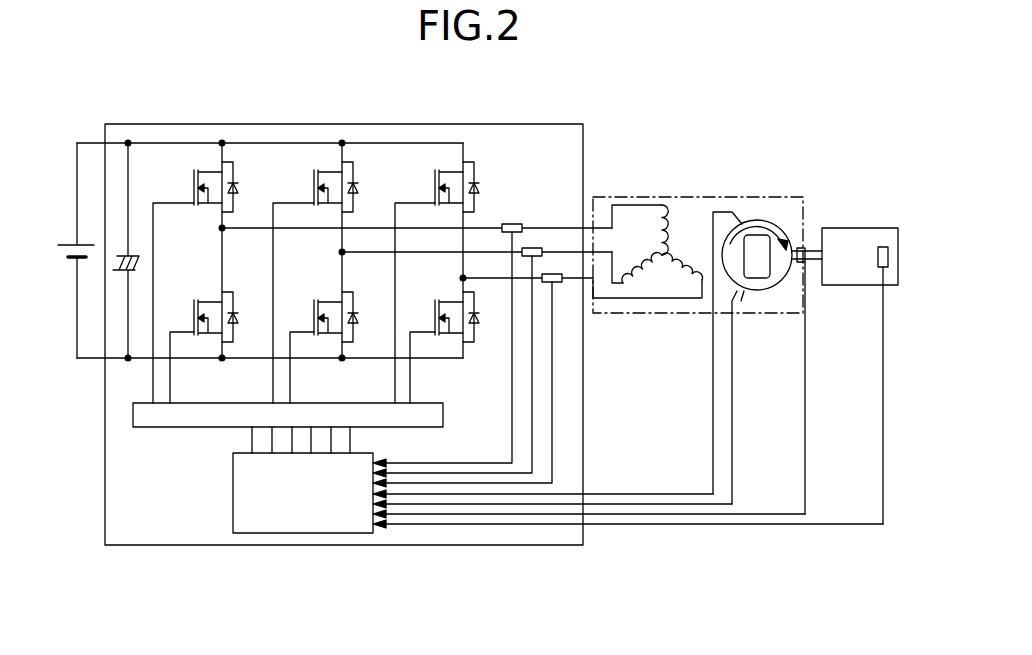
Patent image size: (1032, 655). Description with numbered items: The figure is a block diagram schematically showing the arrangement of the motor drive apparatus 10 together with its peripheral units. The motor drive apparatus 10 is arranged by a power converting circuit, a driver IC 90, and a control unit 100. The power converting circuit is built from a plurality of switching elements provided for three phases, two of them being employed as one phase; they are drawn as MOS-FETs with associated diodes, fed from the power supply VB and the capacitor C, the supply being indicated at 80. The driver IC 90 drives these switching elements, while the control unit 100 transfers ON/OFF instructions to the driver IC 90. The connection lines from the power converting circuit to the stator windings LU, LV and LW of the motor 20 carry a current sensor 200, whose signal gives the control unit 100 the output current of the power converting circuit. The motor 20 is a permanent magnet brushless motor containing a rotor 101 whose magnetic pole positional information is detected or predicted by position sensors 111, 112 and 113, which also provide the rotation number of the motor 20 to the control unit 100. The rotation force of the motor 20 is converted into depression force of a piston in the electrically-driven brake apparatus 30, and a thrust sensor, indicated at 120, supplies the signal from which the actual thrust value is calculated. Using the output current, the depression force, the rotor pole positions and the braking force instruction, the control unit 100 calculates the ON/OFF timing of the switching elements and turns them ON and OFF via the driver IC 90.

The motor drive apparatus 10 is at (344, 307).
The motor 20 is at (725, 326).
The electrically-driven brake apparatus 30 is at (858, 347).
The battery power source 80 is at (52, 237).
The driver IC 90 is at (443, 411).
The control unit 100 is at (233, 493).
The rotor 101 is at (760, 236).
The position sensor 111 is at (742, 221).
The position sensor 112 is at (740, 305).
The position sensor 113 is at (805, 283).
The load sensor 120 is at (883, 247).
The current sensor 200 is at (568, 217).